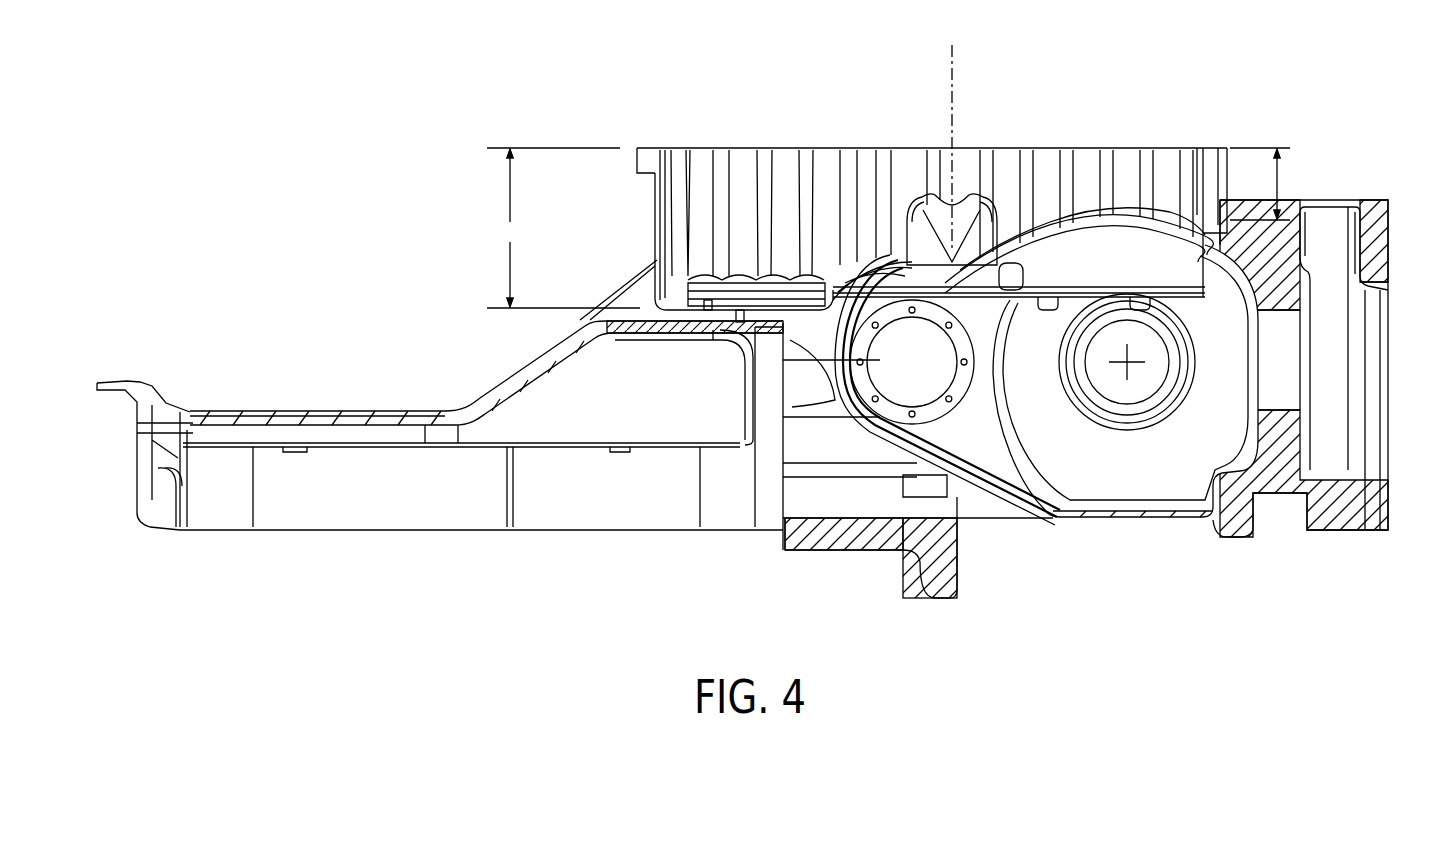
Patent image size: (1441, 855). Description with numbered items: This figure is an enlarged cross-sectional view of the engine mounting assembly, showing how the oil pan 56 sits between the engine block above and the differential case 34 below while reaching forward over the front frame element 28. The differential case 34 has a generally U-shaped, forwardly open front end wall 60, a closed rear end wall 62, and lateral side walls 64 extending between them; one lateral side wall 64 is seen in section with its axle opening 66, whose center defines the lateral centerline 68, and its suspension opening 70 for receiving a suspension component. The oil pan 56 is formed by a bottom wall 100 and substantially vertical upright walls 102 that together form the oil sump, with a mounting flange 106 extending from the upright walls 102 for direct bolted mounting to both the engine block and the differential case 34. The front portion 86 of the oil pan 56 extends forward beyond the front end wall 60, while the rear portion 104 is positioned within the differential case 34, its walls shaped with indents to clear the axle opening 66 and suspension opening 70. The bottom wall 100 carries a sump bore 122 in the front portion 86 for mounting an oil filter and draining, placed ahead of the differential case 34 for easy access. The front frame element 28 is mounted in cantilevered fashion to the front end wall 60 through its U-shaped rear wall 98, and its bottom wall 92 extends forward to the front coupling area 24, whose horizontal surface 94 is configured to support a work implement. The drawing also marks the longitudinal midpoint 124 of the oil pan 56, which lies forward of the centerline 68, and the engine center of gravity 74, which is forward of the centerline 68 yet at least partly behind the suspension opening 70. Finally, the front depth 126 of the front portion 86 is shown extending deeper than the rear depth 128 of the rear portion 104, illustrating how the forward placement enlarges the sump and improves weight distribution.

The front coupling area 24 is at (143, 366).
The front frame element 28 is at (352, 532).
The differential case 34 is at (869, 555).
The oil pan 56 is at (651, 193).
The front end wall 60 is at (782, 494).
The rear end wall 62 is at (1390, 226).
The lateral side wall 64 is at (1038, 379).
The axle opening 66 is at (1092, 378).
The centerline 68 is at (1130, 355).
The suspension opening 70 is at (940, 385).
The center of gravity 74 is at (862, 214).
The front portion 86 is at (657, 138).
The bottom wall 92 is at (368, 410).
The horizontal surface 94 is at (107, 382).
The rear wall 98 is at (790, 442).
The bottom wall 100 is at (868, 270).
The upright walls 102 is at (653, 203).
The rear portion 104 is at (832, 137).
The mounting flange 106 is at (650, 148).
The sump bore 122 is at (738, 318).
The longitudinal midpoint 124 is at (951, 72).
The front depth 126 is at (563, 228).
The rear depth 128 is at (1278, 185).